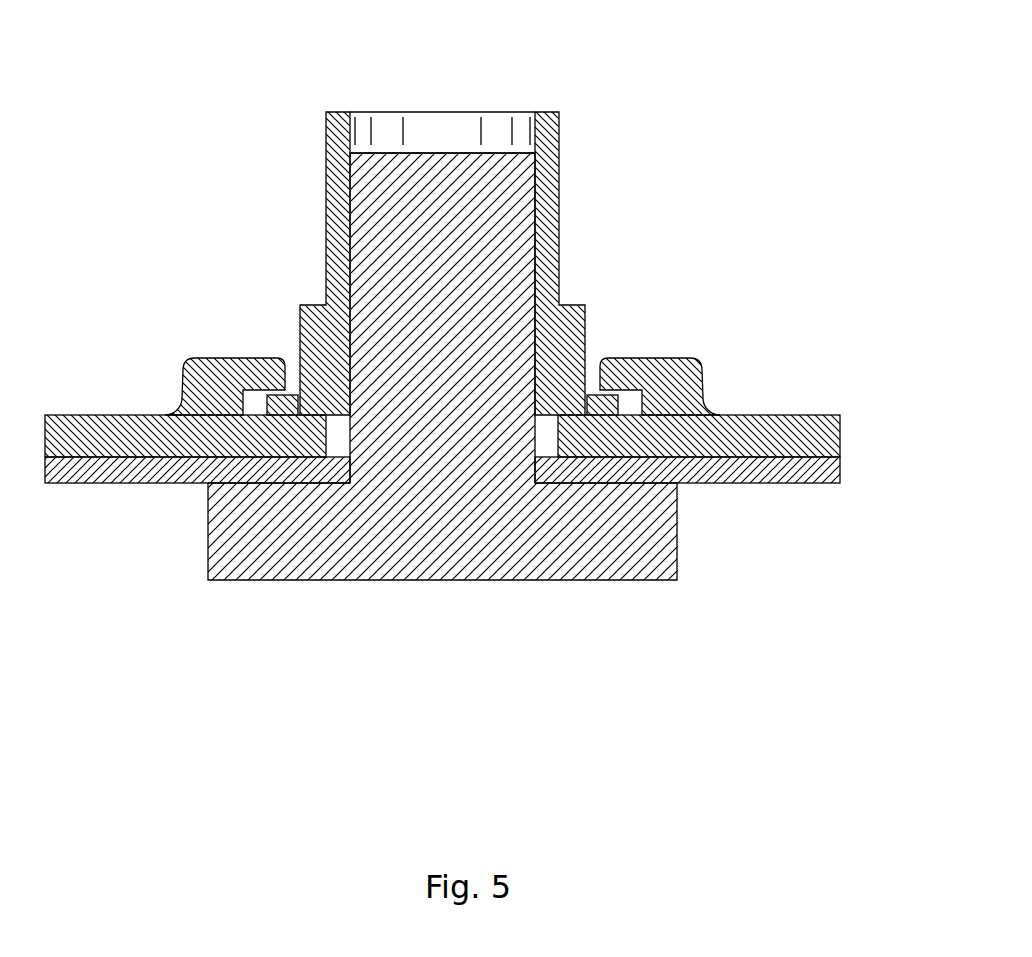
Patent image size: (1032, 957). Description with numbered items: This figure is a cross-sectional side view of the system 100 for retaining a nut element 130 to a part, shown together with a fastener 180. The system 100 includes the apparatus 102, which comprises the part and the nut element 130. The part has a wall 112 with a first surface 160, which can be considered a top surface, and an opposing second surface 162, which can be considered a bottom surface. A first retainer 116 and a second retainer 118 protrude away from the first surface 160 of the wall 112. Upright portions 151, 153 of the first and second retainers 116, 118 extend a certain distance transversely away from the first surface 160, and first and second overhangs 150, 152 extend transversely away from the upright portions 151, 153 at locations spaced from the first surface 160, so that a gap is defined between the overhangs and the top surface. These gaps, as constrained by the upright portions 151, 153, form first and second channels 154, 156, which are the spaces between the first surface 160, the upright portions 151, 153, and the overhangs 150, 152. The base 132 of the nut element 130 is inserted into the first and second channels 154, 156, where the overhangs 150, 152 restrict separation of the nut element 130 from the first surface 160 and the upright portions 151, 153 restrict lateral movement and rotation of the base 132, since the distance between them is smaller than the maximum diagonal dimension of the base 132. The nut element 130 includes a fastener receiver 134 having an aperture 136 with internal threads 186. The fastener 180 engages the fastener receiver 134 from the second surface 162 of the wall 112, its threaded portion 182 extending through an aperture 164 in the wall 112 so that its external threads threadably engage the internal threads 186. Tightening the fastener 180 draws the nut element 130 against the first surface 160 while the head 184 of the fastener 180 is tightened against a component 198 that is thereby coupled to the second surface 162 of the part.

The system 100 is at (471, 344).
The apparatus 102 is at (471, 344).
The wall 112 is at (471, 451).
The first retainer 116 is at (175, 339).
The second retainer 118 is at (721, 339).
The nut element 130 is at (472, 217).
The base 132 is at (283, 416).
The fastener receiver 134 is at (552, 263).
The aperture 136 is at (350, 137).
The first overhang 150 is at (263, 368).
The upright portion 151 is at (195, 397).
The second overhang 152 is at (628, 368).
The upright portion 153 is at (695, 397).
The first channel 154 is at (285, 388).
The second channel 156 is at (602, 390).
The first surface 160 is at (812, 413).
The second surface 162 is at (785, 460).
The aperture 164 is at (557, 430).
The fastener 180 is at (481, 411).
The threaded portion 182 is at (528, 192).
The head 184 is at (665, 545).
The internal threads 186 is at (350, 258).
The component 198 is at (848, 485).